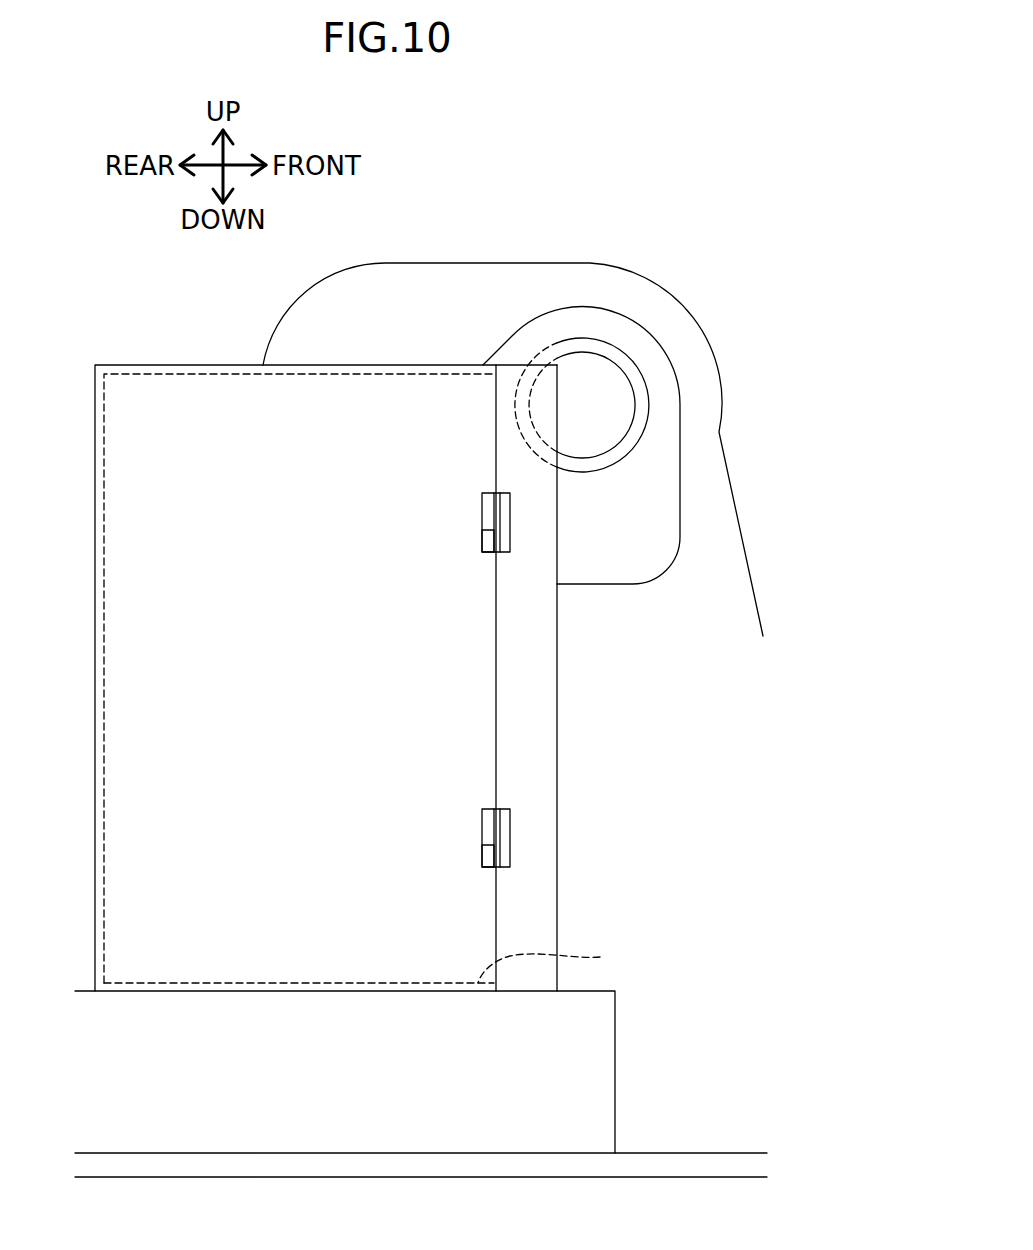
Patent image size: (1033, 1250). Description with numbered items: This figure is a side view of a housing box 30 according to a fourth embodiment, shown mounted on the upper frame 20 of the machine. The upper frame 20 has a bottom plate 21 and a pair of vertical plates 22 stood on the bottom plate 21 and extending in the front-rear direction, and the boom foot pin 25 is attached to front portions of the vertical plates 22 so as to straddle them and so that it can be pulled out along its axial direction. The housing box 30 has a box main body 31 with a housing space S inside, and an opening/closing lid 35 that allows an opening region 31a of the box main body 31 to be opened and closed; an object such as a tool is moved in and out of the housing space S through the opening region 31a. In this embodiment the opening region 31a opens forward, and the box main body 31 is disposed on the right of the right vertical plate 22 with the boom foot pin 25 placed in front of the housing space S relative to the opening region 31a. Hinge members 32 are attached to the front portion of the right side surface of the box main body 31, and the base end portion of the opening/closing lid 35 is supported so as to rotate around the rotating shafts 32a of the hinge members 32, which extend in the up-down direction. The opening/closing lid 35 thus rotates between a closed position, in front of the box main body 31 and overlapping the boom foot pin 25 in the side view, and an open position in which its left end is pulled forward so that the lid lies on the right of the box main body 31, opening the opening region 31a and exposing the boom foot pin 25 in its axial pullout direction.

The upper frame 20 is at (617, 1044).
The bottom plate 21 is at (710, 1153).
The vertical plate 22 is at (580, 272).
The boom foot pin 25 is at (633, 413).
The housing box 30 is at (587, 852).
The box main body 31 is at (173, 365).
The opening region 31a is at (572, 961).
The hinge member 32 is at (485, 512).
The rotating shaft 32a is at (482, 537).
The opening/closing lid 35 is at (558, 752).
The housing space S is at (145, 606).